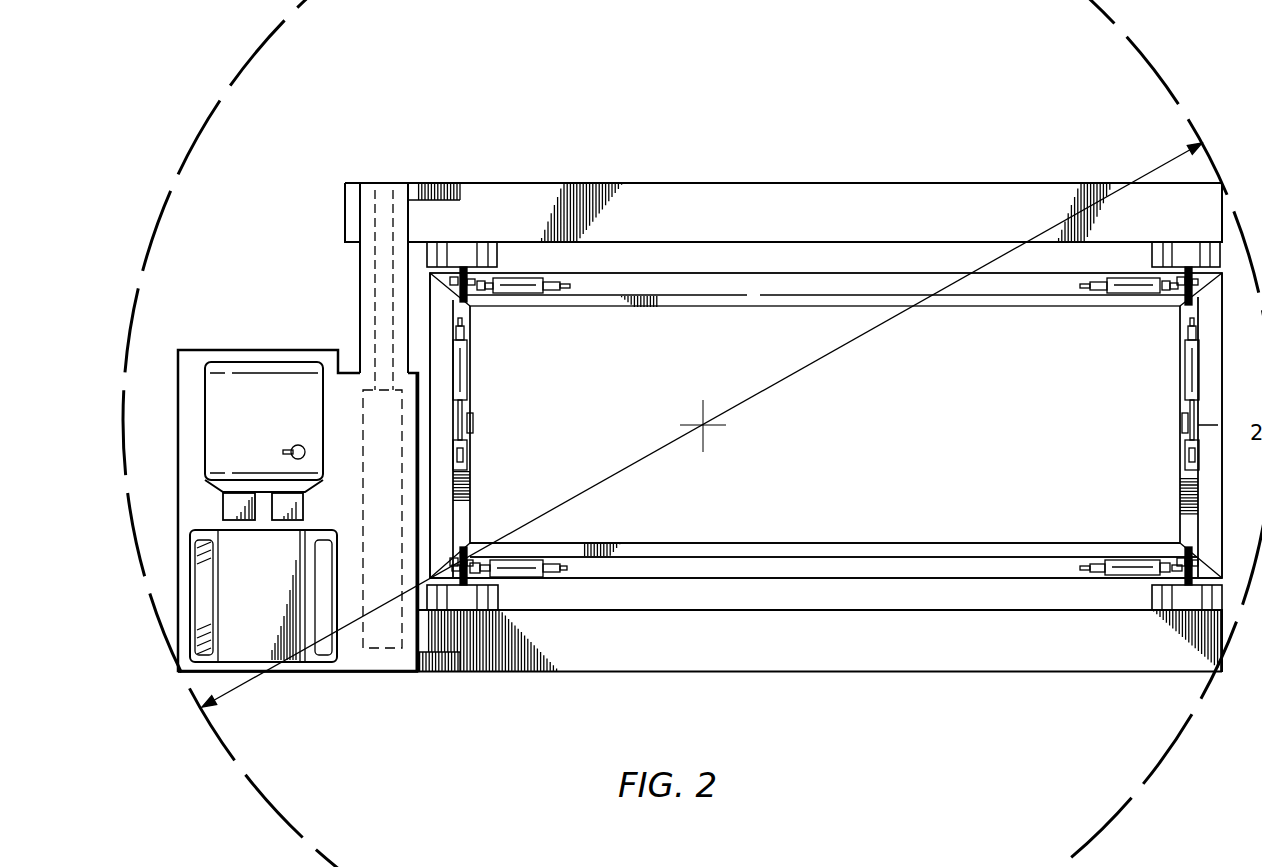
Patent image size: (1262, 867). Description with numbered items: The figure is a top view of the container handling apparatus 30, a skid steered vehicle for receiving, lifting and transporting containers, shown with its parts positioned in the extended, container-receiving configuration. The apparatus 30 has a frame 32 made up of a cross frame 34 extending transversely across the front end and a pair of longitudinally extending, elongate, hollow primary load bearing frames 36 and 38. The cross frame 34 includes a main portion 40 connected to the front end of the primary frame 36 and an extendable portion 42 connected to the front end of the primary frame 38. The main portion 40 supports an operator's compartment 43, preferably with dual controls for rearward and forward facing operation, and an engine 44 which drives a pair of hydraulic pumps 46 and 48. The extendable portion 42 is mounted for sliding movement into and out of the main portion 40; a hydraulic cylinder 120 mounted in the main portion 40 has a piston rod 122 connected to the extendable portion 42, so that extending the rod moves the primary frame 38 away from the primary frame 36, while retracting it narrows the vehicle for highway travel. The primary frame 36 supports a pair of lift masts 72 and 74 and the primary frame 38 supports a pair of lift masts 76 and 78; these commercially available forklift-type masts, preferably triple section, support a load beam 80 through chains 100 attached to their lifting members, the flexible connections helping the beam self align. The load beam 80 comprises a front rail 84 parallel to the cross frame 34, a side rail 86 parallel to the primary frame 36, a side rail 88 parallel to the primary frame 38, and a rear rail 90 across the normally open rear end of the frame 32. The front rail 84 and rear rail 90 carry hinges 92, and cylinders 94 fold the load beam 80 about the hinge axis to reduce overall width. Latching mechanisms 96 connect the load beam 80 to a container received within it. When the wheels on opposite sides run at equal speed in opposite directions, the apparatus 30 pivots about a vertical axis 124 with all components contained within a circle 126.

The container handling apparatus 30 is at (162, 450).
The frame 32 is at (818, 183).
The cross frame 34 is at (178, 614).
The primary load bearing frame 36 is at (872, 675).
The primary load bearing frame 38 is at (698, 188).
The main portion 40 is at (387, 664).
The extendable portion 42 is at (358, 262).
The operator's compartment 43 is at (273, 590).
The engine 44 is at (276, 428).
The hydraulic pump 46 is at (226, 505).
The hydraulic pump 48 is at (296, 505).
The lift mast 72 is at (497, 598).
The lift mast 74 is at (1152, 593).
The lift mast 76 is at (472, 247).
The lift mast 78 is at (1166, 250).
The load beam 80 is at (793, 542).
The front rail 84 is at (472, 495).
The side rail 86 is at (880, 542).
The side rail 88 is at (825, 305).
The rear rail 90 is at (1180, 503).
The hinge 92 is at (1182, 425).
The cylinder 94 is at (1185, 371).
The latching mechanism 96 is at (517, 293).
The chain 100 is at (470, 302).
The hydraulic cylinder 120 is at (362, 648).
The piston rod 122 is at (372, 285).
The vertical axis 124 is at (712, 432).
The circle 126 is at (200, 718).